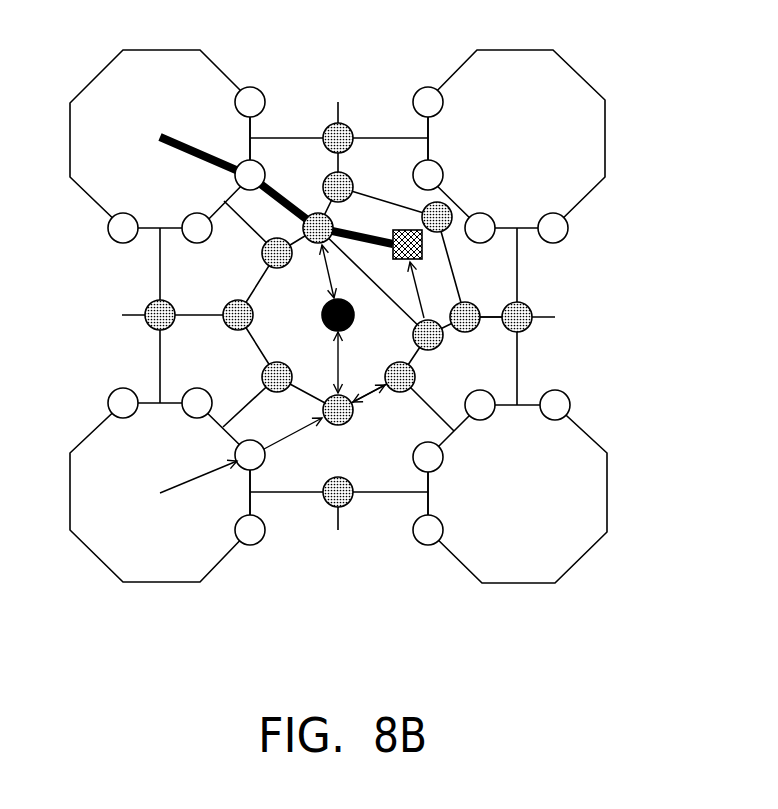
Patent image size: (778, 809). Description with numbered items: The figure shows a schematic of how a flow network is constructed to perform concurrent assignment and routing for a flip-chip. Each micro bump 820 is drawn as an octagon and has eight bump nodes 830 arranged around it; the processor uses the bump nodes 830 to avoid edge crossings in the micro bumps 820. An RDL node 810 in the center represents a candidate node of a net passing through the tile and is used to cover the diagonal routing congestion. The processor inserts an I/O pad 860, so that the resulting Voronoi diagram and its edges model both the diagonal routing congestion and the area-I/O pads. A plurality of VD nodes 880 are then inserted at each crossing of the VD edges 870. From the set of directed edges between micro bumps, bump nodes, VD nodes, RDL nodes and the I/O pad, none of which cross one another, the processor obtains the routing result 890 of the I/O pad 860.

The RDL node 810 is at (355, 316).
The micro bump 820 is at (185, 107).
The bump node 830 is at (570, 405).
The I/O pad 860 is at (422, 244).
The VD edge 870 is at (155, 268).
The VD node 880 is at (528, 327).
The routing result 890 is at (302, 214).